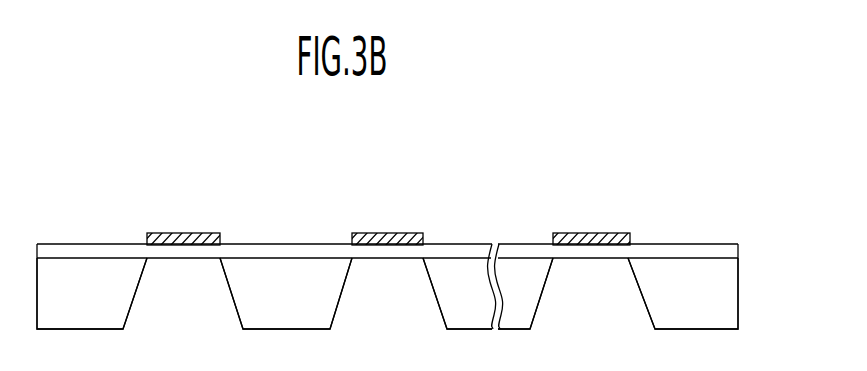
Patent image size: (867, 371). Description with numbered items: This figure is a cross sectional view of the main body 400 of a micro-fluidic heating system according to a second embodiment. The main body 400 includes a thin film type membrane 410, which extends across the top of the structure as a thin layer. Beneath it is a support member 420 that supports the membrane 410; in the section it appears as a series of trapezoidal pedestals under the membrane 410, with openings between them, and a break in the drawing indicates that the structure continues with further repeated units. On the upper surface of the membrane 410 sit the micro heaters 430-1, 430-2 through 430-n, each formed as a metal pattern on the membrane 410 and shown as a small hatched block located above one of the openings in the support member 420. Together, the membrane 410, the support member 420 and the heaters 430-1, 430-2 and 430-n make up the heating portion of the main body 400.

The main body 400 is at (755, 232).
The thin film type membrane 410 is at (727, 252).
The support member 420 is at (727, 300).
The micro heater 430-1 is at (189, 233).
The micro heater 430-2 is at (405, 233).
The micro heater 430-n is at (610, 233).